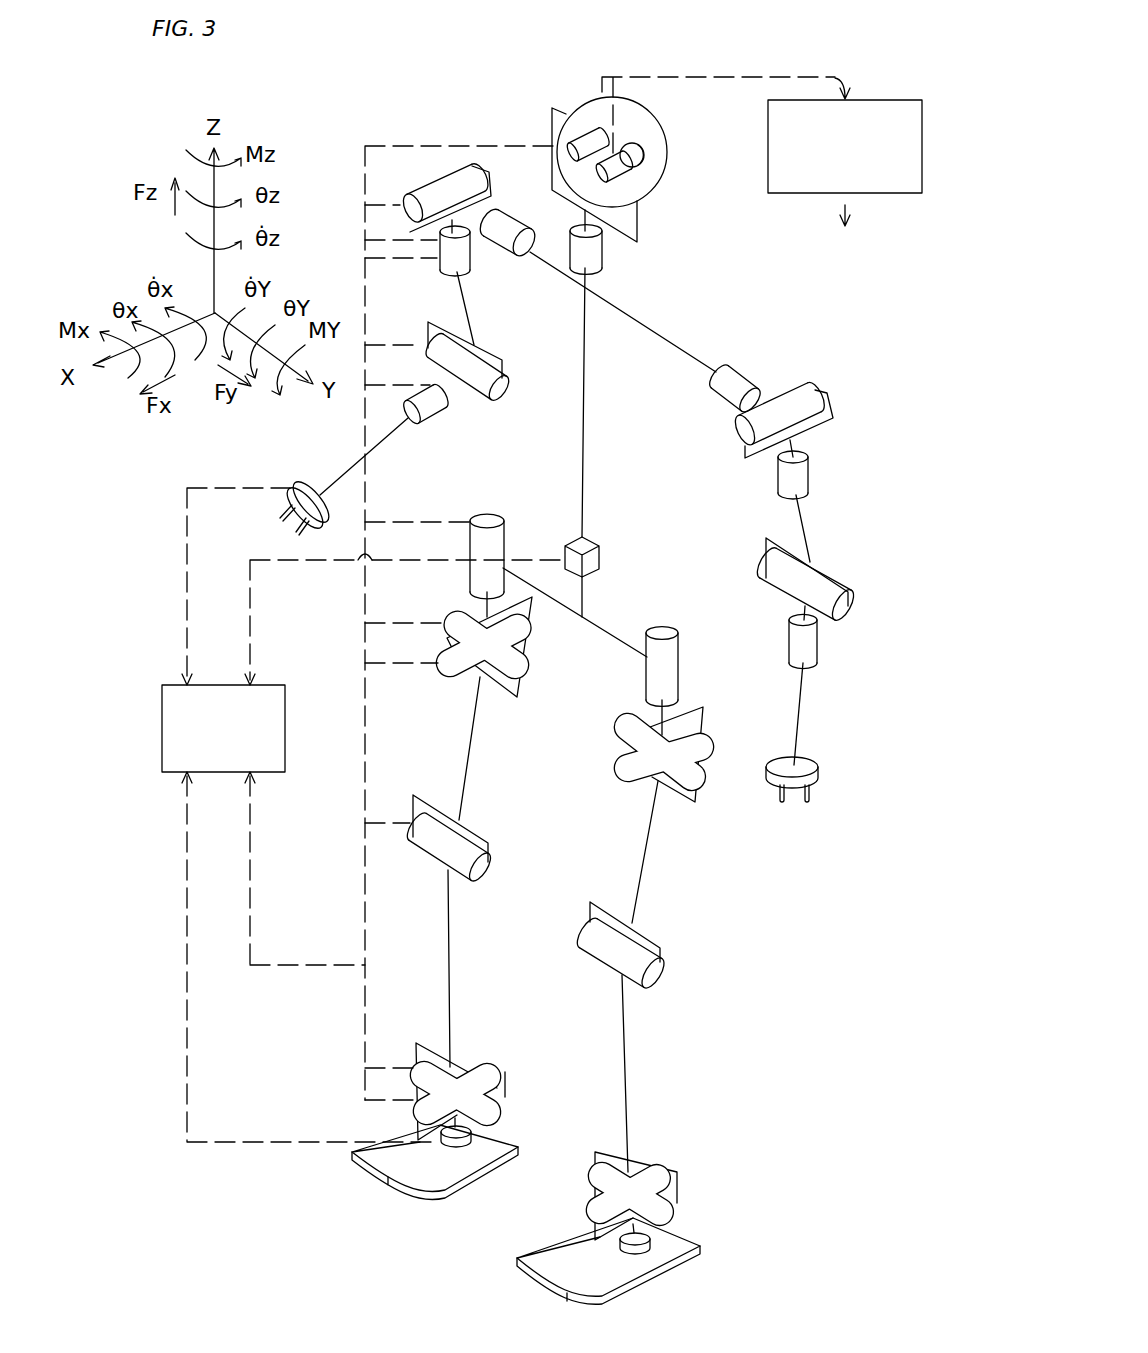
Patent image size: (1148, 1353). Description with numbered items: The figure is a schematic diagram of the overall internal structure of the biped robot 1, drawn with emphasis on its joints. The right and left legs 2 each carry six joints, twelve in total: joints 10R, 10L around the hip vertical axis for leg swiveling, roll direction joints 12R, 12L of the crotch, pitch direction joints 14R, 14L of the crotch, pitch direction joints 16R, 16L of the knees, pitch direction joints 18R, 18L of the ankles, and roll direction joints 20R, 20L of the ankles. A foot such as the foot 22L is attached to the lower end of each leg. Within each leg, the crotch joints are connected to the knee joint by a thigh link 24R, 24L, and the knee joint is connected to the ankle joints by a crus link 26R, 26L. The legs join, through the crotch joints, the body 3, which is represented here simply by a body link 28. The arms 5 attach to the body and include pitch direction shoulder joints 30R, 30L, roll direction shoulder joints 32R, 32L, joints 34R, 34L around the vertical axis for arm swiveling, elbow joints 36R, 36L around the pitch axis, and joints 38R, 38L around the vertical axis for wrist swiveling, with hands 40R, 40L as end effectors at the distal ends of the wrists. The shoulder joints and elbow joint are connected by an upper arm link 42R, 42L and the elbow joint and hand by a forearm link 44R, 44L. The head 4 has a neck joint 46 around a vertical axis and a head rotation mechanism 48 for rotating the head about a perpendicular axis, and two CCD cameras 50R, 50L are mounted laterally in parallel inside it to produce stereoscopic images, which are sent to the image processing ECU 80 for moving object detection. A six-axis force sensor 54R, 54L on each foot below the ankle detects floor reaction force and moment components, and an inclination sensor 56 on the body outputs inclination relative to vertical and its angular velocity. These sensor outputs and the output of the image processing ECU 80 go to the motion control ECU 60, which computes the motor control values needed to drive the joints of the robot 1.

The robot 1 is at (714, 321).
The legs 2 is at (757, 917).
The body 3 is at (622, 274).
The head 4 is at (680, 168).
The arms 5 is at (838, 437).
The hip vertical-axis joint 10R is at (486, 520).
The hip vertical-axis joint 10L is at (670, 673).
The crotch roll direction joint 12R is at (452, 677).
The crotch roll direction joint 12L is at (683, 745).
The crotch pitch direction joint 14R is at (455, 612).
The crotch pitch direction joint 14L is at (698, 778).
The knee pitch direction joint 16R is at (472, 885).
The knee pitch direction joint 16L is at (667, 968).
The ankle pitch direction joint 18R is at (492, 1110).
The ankle pitch direction joint 18L is at (672, 1210).
The ankle roll direction joint 20R is at (485, 1068).
The ankle roll direction joint 20L is at (655, 1170).
The foot 22L is at (673, 1247).
The thigh link 24R is at (464, 800).
The thigh link 24L is at (648, 888).
The crus link 26R is at (452, 942).
The crus link 26L is at (627, 1065).
The body link 28 is at (587, 386).
The shoulder pitch direction joint 30R is at (508, 230).
The shoulder pitch direction joint 30L is at (745, 382).
The shoulder roll direction joint 32R is at (455, 178).
The shoulder roll direction joint 32L is at (807, 397).
The arm swiveling joint 34R is at (469, 258).
The arm swiveling joint 34L is at (810, 475).
The elbow joint 36R is at (508, 392).
The elbow joint 36L is at (850, 597).
The wrist swiveling joint 38R is at (440, 408).
The wrist swiveling joint 38L is at (817, 650).
The hand 40R is at (312, 530).
The hand 40L is at (808, 782).
The upper arm link 42R is at (469, 312).
The upper arm link 42L is at (807, 528).
The forearm link 44R is at (436, 362).
The forearm link 44L is at (790, 610).
The neck joint 46 is at (598, 270).
The head rotation mechanism 48 is at (640, 160).
The CCD camera 50R is at (590, 130).
The CCD camera 50L is at (632, 178).
The six-axis force sensor 54R is at (463, 1142).
The six-axis force sensor 54L is at (642, 1249).
The inclination sensor 56 is at (600, 550).
The motion control ECU 60 is at (363, 644).
The image processing ECU 80 is at (878, 103).